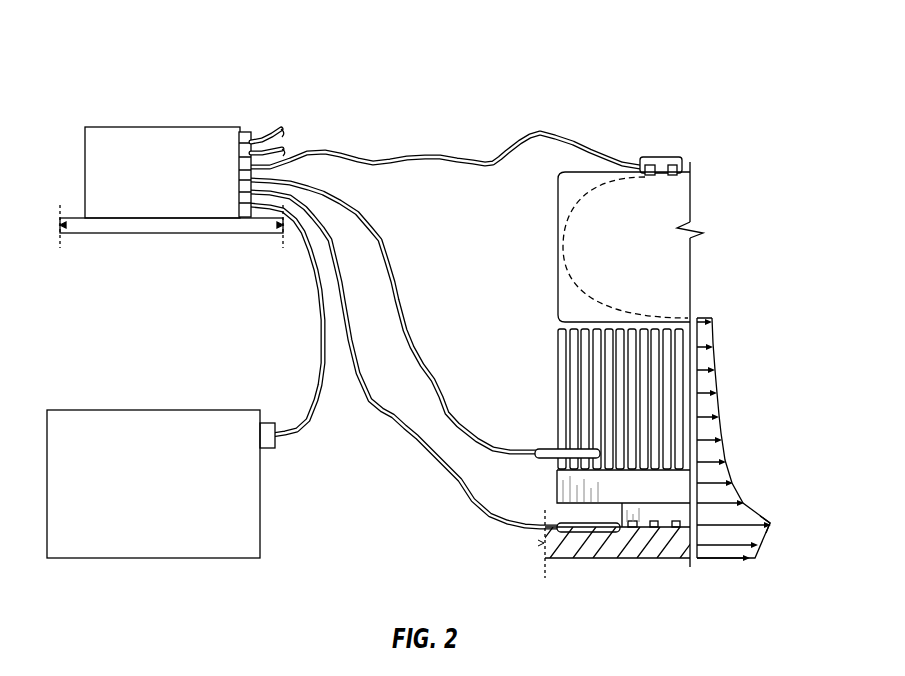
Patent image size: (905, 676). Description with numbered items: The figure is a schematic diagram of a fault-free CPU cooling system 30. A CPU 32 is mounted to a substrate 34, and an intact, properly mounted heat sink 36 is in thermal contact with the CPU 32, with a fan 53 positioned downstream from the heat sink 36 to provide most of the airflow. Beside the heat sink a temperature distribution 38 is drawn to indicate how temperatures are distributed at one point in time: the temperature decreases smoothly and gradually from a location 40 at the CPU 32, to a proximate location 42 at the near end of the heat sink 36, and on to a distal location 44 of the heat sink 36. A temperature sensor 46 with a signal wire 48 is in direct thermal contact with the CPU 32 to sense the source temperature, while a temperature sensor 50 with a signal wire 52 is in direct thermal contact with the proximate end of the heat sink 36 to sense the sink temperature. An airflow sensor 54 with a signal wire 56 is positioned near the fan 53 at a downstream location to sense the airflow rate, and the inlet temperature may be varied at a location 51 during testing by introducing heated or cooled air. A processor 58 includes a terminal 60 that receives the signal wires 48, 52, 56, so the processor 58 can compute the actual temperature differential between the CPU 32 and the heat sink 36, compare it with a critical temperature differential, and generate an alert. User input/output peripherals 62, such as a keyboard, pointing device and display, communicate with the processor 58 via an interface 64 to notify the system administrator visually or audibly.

The cooling system 30 is at (680, 64).
The CPU 32 is at (667, 517).
The substrate 34 is at (637, 553).
The heat sink 36 is at (557, 420).
The temperature distribution 38 is at (710, 428).
The location at the CPU 40 is at (773, 524).
The proximate location 42 is at (725, 452).
The distal location 44 is at (712, 333).
The temperature sensor 46 is at (577, 528).
The signal wire 48 is at (507, 525).
The temperature sensor 50 is at (545, 448).
The inlet temperature location 51 is at (594, 515).
The signal wire 52 is at (421, 352).
The fan 53 is at (681, 273).
The airflow sensor 54 is at (662, 157).
The signal wire 56 is at (545, 130).
The processor 58 is at (158, 130).
The terminal 60 is at (244, 130).
The user input/output peripherals 62 is at (262, 507).
The interface 64 is at (270, 423).